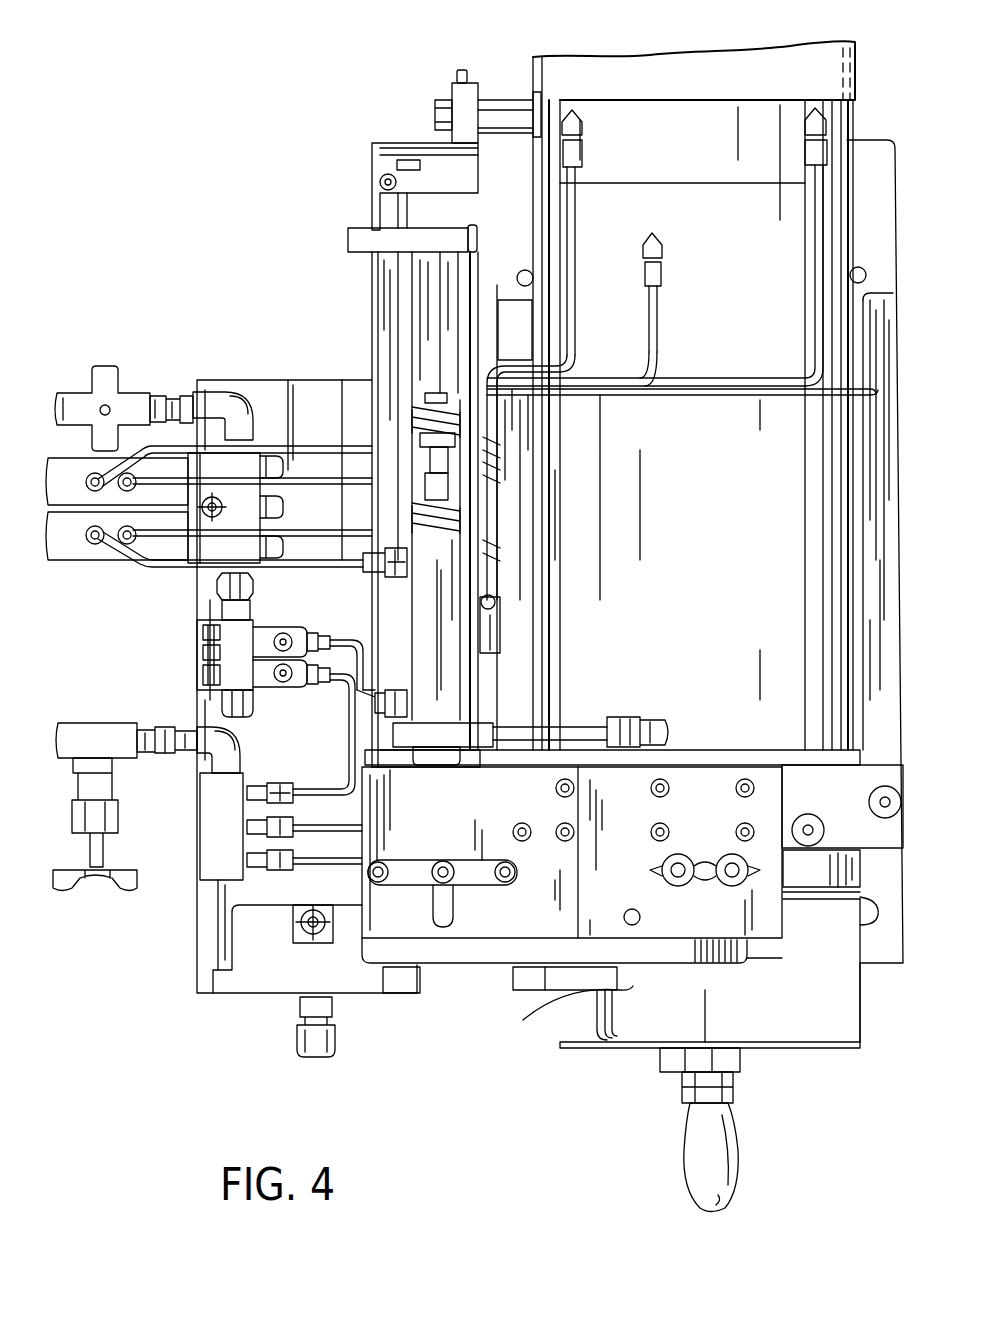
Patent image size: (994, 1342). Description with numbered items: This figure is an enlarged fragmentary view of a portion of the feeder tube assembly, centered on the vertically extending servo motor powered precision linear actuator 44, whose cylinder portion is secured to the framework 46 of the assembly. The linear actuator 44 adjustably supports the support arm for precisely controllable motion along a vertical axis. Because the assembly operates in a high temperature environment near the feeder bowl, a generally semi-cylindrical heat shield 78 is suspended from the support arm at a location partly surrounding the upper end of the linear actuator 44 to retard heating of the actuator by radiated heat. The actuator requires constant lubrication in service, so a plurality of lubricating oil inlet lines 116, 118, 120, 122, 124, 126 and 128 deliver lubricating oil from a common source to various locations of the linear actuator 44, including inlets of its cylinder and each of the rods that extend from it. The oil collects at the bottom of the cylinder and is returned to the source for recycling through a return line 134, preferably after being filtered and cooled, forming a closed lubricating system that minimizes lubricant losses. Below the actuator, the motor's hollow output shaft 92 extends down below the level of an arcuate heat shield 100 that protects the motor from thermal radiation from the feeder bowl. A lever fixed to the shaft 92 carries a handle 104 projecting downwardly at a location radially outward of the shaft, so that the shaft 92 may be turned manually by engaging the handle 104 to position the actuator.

The heat shield 78 is at (578, 67).
The framework 46 is at (860, 438).
The linear actuator 44 is at (760, 546).
The lubricating oil inlet line 116 is at (314, 446).
The lubricating oil inlet line 118 is at (312, 482).
The lubricating oil inlet line 120 is at (330, 532).
The lubricating oil inlet line 122 is at (345, 567).
The lubricating oil inlet line 124 is at (315, 793).
The lubricating oil inlet line 126 is at (303, 832).
The lubricating oil inlet line 128 is at (313, 866).
The return line 134 is at (570, 717).
The hollow output shaft 92 is at (555, 1024).
The arcuate heat shield 100 is at (865, 1020).
The handle 104 is at (737, 1166).